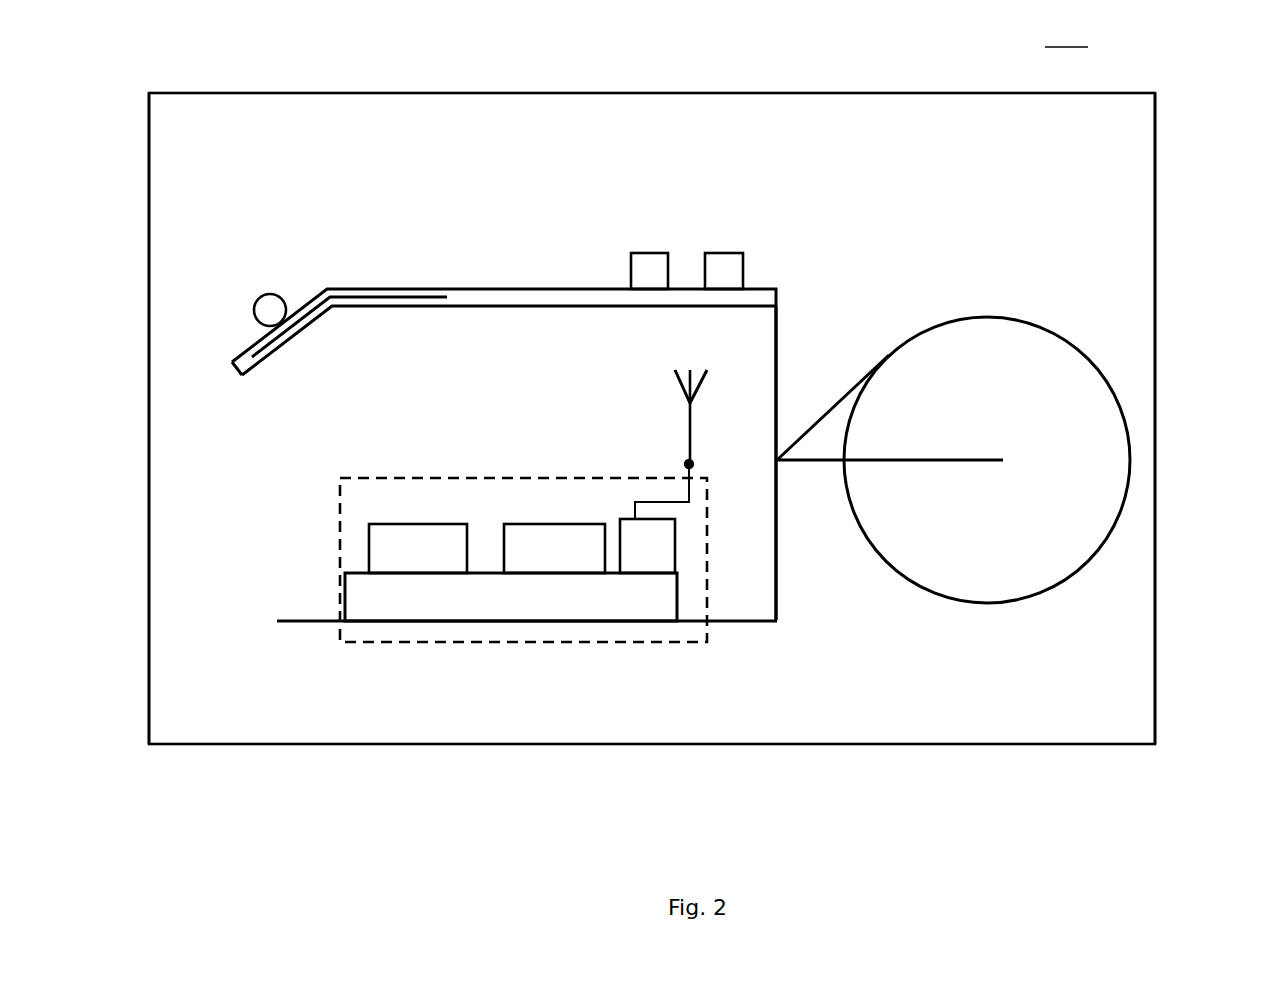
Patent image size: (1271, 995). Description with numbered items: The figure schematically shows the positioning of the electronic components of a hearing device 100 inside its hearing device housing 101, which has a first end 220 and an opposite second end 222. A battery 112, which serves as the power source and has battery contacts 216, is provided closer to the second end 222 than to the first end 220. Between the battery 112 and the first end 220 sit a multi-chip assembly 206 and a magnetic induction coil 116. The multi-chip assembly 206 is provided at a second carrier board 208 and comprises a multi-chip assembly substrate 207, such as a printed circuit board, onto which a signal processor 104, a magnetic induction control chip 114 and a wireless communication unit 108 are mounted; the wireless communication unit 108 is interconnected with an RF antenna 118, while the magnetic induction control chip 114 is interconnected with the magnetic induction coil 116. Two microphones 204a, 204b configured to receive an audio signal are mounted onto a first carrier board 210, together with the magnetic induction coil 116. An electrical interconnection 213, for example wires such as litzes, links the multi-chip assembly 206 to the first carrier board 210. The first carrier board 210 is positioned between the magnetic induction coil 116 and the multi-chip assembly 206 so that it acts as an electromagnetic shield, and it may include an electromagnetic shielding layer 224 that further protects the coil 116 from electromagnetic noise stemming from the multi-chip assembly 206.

The hearing device 100 is at (1066, 35).
The hearing device housing 101 is at (573, 93).
The signal processor 104 is at (433, 524).
The wireless communication unit 108 is at (675, 540).
The battery 112 is at (1128, 478).
The magnetic induction control chip 114 is at (573, 524).
The magnetic induction coil 116 is at (270, 295).
The RF antenna 118 is at (708, 382).
The microphone 204a is at (652, 253).
The microphone 204b is at (717, 253).
The multi-chip assembly 206 is at (707, 583).
The multi-chip assembly substrate 207 is at (678, 597).
The second carrier board 208 is at (303, 623).
The first carrier board 210 is at (530, 289).
The electrical interconnection 213 is at (780, 590).
The battery contacts 216 is at (820, 423).
The first end 220 is at (149, 630).
The second end 222 is at (1155, 603).
The electromagnetic shielding layer 224 is at (362, 298).